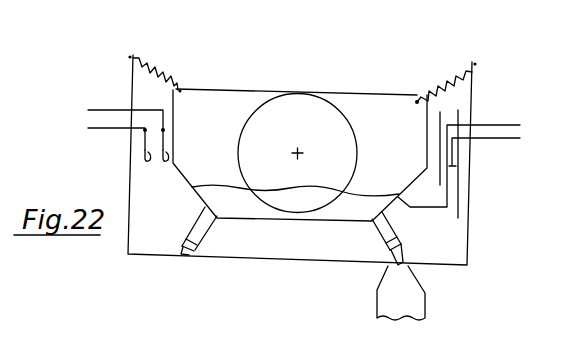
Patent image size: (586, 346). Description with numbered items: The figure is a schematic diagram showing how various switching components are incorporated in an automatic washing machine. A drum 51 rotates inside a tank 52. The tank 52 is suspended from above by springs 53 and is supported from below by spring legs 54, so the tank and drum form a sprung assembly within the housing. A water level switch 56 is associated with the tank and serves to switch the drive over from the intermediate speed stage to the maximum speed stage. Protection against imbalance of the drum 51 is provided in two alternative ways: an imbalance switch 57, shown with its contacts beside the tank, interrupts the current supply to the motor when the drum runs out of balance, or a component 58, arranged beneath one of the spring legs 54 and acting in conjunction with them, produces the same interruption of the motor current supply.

The drum 51 is at (249, 138).
The tank 52 is at (196, 89).
The springs 53 is at (150, 72).
The spring legs 54 is at (192, 237).
The water level switch 56 is at (450, 175).
The imbalance switch 57 is at (143, 146).
The component 58 is at (408, 315).